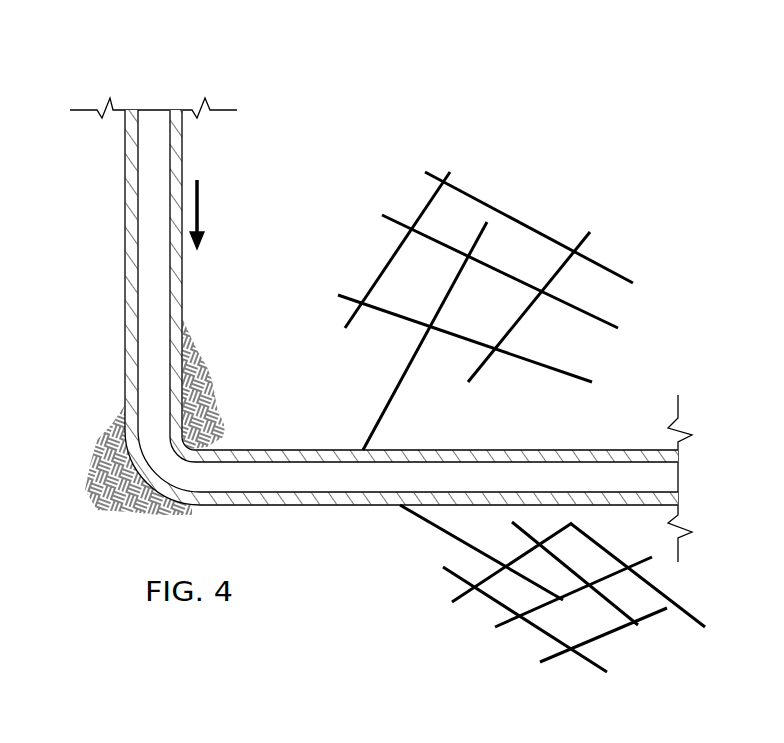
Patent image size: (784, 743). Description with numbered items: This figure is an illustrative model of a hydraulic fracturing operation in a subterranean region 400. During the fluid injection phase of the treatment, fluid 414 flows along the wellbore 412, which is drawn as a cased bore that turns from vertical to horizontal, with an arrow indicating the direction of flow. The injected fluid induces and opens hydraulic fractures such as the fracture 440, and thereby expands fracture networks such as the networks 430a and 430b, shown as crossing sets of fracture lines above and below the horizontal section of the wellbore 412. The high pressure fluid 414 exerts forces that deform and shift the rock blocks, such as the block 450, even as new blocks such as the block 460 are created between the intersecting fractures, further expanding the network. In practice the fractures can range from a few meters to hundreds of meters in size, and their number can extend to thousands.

The subterranean region 400 is at (267, 66).
The wellbore 412 is at (130, 308).
The fluid 414 is at (203, 221).
The fracture network 430a is at (489, 273).
The fracture network 430b is at (478, 626).
The fracture 440 is at (412, 360).
The rock block 450 is at (507, 280).
The new block 460 is at (587, 323).